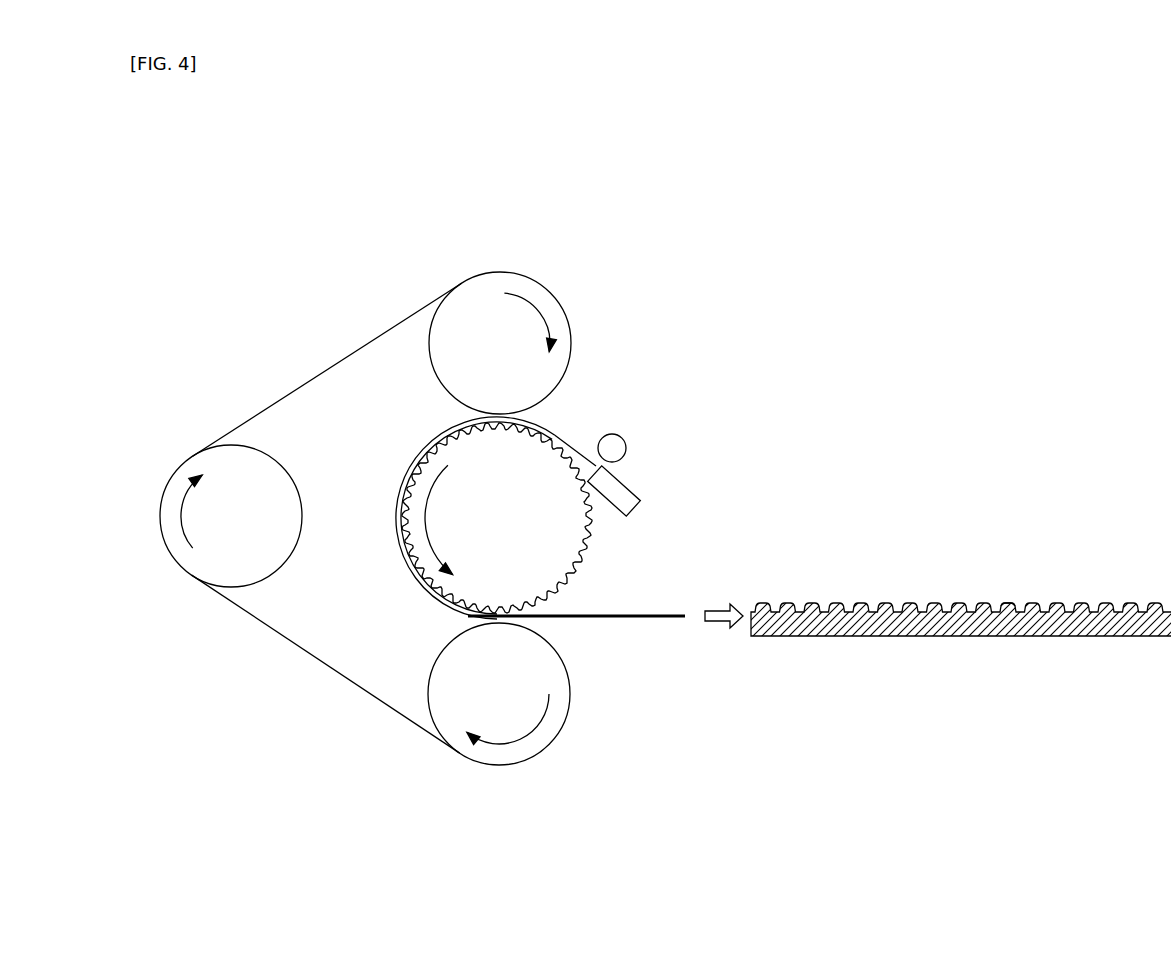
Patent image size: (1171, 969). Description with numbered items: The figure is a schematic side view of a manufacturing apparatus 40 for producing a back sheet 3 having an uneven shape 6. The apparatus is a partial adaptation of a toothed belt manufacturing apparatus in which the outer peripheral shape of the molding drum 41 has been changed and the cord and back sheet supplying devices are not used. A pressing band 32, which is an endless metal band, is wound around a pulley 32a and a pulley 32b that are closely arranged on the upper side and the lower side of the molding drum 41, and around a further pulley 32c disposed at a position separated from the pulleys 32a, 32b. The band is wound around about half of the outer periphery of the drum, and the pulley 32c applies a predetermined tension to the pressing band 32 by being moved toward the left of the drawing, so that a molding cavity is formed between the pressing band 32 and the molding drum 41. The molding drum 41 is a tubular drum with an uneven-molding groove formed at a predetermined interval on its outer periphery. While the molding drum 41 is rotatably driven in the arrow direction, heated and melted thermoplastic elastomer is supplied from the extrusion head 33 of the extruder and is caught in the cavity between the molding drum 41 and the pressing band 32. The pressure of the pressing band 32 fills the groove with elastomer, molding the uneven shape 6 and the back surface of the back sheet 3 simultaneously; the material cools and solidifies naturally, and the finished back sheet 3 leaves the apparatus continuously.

The manufacturing apparatus 40 is at (481, 206).
The pressing band 32 is at (333, 362).
The pulley 32a is at (500, 272).
The pulley 32b is at (553, 648).
The pulley 32c is at (281, 466).
The molding drum 41 is at (574, 563).
The extrusion head 33 is at (640, 487).
The back sheet 3 is at (837, 636).
The uneven shape 6 is at (1026, 603).